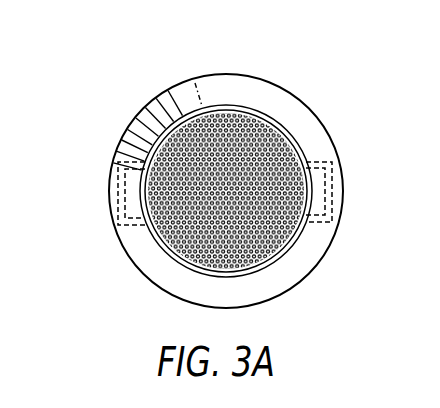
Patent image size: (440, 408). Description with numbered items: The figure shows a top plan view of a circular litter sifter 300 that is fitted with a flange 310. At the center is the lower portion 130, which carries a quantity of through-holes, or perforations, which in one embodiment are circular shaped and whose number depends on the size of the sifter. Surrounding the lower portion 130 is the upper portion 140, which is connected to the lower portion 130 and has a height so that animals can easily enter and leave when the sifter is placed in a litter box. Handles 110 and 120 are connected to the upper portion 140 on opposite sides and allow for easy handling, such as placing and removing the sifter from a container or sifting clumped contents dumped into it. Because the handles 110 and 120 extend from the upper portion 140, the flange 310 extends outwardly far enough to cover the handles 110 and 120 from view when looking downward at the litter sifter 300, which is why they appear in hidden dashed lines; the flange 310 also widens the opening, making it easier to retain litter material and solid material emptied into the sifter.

The litter sifter 300 is at (331, 301).
The flange 310 is at (181, 93).
The upper portion 140 is at (227, 105).
The lower portion 130 is at (177, 150).
The handle 120 is at (120, 190).
The handle 110 is at (333, 192).